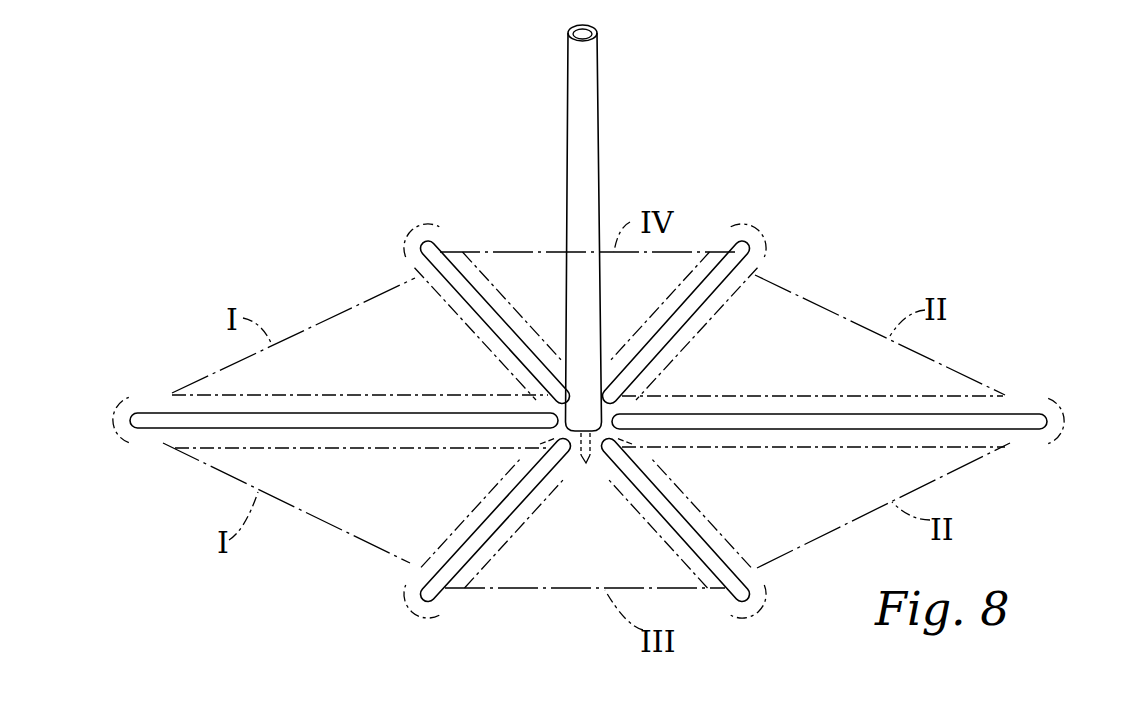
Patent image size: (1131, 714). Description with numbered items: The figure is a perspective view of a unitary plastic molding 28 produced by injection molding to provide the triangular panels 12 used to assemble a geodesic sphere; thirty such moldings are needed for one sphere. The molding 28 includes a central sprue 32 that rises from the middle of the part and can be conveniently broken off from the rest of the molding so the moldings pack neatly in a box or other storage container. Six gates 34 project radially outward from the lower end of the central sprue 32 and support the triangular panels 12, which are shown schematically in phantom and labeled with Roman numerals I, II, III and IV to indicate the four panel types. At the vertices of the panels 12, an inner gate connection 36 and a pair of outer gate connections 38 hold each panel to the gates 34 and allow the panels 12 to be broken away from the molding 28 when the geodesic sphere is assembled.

The panels 12 is at (204, 376).
The unitary plastic molding 28 is at (810, 250).
The central sprue 32 is at (583, 113).
The gates 34 is at (501, 339).
The inner gate connection 36 is at (522, 443).
The outer gate connections 38 is at (150, 440).